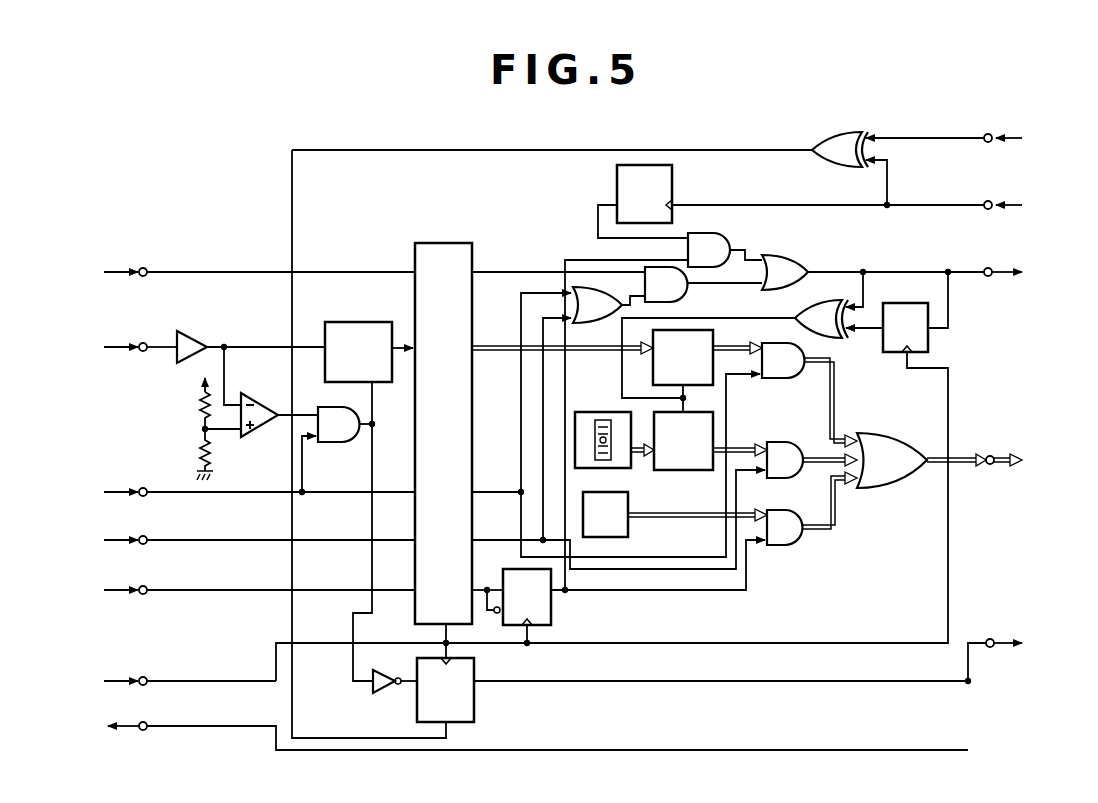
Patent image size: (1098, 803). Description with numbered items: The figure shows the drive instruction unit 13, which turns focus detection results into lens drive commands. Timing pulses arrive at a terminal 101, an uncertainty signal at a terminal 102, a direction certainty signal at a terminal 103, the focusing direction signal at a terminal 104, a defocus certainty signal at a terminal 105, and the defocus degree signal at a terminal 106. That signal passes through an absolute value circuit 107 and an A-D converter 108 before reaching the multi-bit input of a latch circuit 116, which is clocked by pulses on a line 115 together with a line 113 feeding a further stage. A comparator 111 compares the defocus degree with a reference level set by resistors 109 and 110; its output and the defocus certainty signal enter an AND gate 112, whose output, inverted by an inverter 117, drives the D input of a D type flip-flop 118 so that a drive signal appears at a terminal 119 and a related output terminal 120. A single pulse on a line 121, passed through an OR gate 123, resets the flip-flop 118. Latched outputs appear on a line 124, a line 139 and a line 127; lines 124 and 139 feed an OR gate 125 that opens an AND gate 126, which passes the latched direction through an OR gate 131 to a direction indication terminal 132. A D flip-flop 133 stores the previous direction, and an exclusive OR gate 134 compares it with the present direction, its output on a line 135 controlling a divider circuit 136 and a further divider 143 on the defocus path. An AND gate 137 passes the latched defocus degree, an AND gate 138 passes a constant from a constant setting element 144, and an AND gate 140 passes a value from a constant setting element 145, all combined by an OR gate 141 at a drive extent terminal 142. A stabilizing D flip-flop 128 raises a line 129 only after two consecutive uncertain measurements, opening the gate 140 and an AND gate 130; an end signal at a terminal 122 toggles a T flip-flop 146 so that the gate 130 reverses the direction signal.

The drive instruction unit 13 is at (552, 109).
The terminal 101 is at (169, 668).
The terminal 102 is at (239, 577).
The terminal 103 is at (239, 527).
The terminal 104 is at (239, 255).
The terminal 105 is at (239, 474).
The terminal 106 is at (120, 330).
The absolute value circuit 107 is at (251, 332).
The A-D converter 108 is at (369, 335).
The resistor 109 is at (189, 403).
The resistor 110 is at (190, 454).
The comparator 111 is at (261, 392).
The AND gate 112 is at (338, 449).
The clock line 113 is at (382, 531).
The line 115 is at (597, 516).
The latch circuit 116 is at (530, 431).
The inverter 117 is at (395, 698).
The D type flip-flop 118 is at (630, 444).
The terminal 119 is at (1018, 641).
The output terminal 120 is at (515, 719).
The line 121 is at (968, 124).
The terminal 122 is at (871, 189).
The OR gate 123 is at (839, 130).
The line 124 is at (616, 425).
The OR gate 125 is at (604, 275).
The AND gate 126 is at (703, 296).
The line 127 is at (488, 577).
The D flip-flop 128 is at (552, 606).
The line 129 is at (658, 446).
The AND gate 130 is at (732, 240).
The OR gate 131 is at (873, 259).
The terminal 132 is at (1022, 257).
The D flip-flop 133 is at (913, 315).
The exclusive OR gate 134 is at (834, 332).
The line 135 is at (708, 350).
The divider circuit 136 is at (617, 357).
The AND gate 137 is at (809, 395).
The AND gate 138 is at (800, 440).
The line 139 is at (618, 443).
The AND gate 140 is at (812, 508).
The OR gate 141 is at (916, 444).
The terminal 142 is at (1017, 444).
The divide-by-two circuit 143 is at (710, 459).
The constant setting element 144 is at (614, 425).
The constant setting element 145 is at (675, 526).
The T flip-flop 146 is at (659, 200).